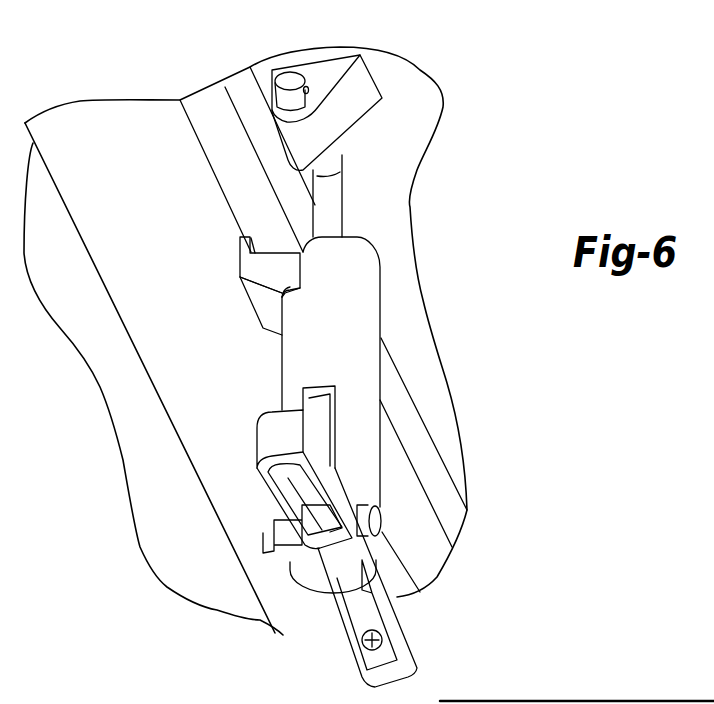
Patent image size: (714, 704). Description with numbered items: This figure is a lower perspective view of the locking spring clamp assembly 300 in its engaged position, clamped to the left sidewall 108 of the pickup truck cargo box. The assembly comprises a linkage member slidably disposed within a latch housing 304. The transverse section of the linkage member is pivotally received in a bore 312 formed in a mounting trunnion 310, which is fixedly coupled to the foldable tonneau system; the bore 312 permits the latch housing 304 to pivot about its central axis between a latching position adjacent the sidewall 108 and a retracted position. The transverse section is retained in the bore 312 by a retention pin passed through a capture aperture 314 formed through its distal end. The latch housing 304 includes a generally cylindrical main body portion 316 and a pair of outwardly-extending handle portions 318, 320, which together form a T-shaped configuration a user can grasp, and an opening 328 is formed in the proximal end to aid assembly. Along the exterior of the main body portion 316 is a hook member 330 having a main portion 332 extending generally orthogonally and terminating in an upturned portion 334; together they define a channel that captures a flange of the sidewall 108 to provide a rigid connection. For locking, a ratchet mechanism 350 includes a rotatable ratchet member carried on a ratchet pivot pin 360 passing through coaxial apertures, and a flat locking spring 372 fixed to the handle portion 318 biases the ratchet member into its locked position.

The left sidewall 108 is at (140, 115).
The locking spring clamp assembly 300 is at (476, 218).
The latch housing 304 is at (165, 439).
The mounting trunnion 310 is at (378, 92).
The bore 312 is at (310, 93).
The capture aperture 314 is at (308, 89).
The main body portion 316 is at (297, 373).
The handle portion 318 is at (408, 647).
The handle portion 320 is at (258, 493).
The opening 328 is at (363, 650).
The hook member 330 is at (240, 278).
The main portion 332 is at (278, 280).
The upturned portion 334 is at (240, 243).
The ratchet mechanism 350 is at (322, 552).
The ratchet pivot pin 360 is at (380, 527).
The locking spring 372 is at (360, 617).